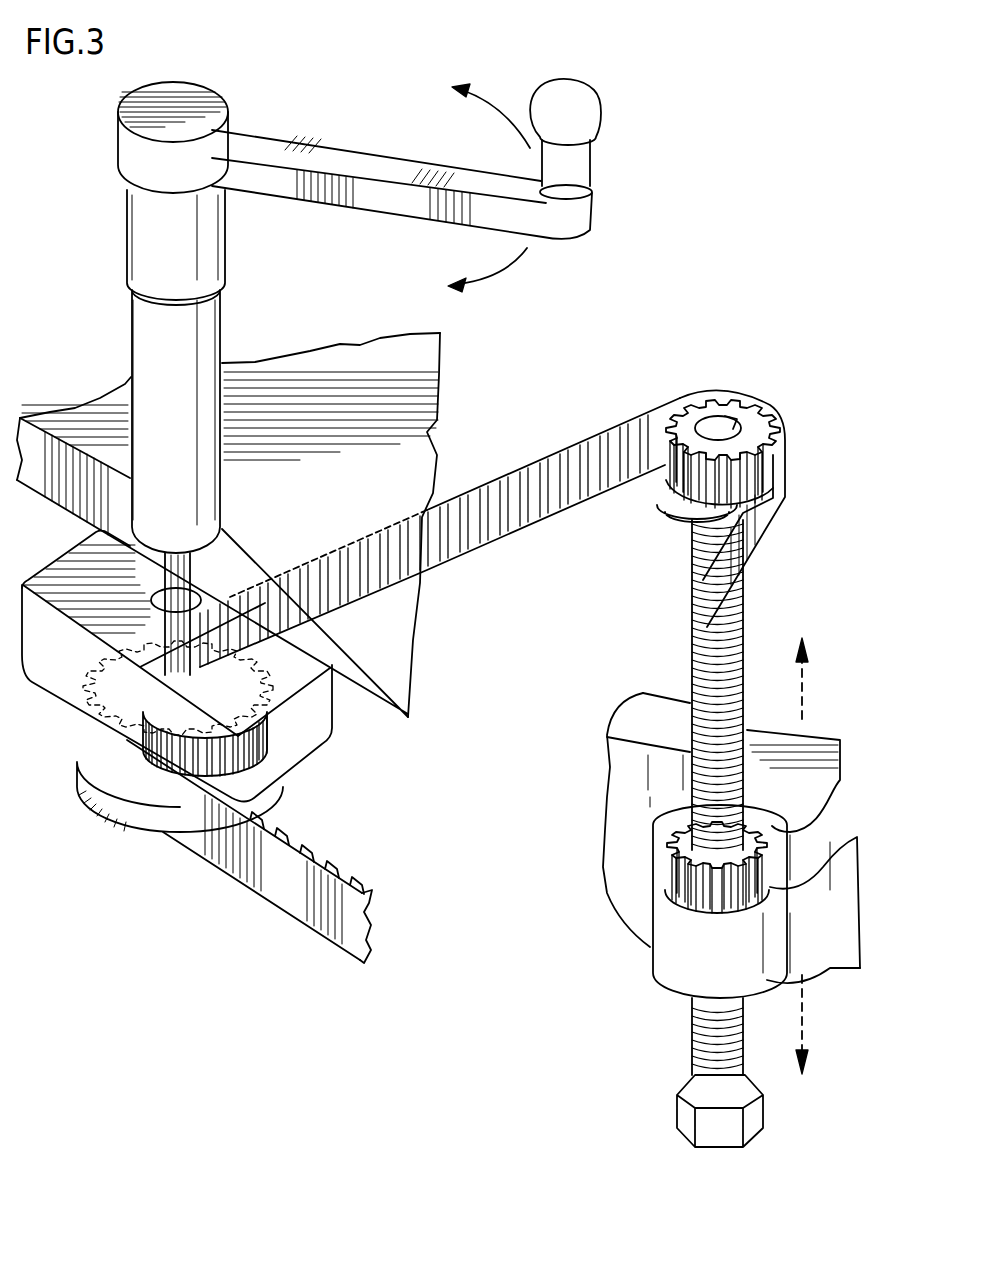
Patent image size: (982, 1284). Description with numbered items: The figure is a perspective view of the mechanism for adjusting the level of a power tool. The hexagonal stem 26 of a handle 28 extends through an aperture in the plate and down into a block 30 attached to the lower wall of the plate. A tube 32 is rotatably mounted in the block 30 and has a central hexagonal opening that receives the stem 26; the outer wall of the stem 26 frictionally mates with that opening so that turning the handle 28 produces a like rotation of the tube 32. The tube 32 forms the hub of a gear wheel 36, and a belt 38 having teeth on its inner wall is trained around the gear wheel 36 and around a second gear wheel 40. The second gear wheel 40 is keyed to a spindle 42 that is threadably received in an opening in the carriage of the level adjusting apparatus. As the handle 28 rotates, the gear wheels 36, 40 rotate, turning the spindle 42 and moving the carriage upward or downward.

The hexagonal stem 26 is at (150, 580).
The handle 28 is at (365, 158).
The block 30 is at (57, 670).
The tube 32 is at (150, 722).
The gear wheel 36 is at (305, 745).
The belt 38 is at (250, 867).
The second gear wheel 40 is at (660, 495).
The spindle 42 is at (692, 652).